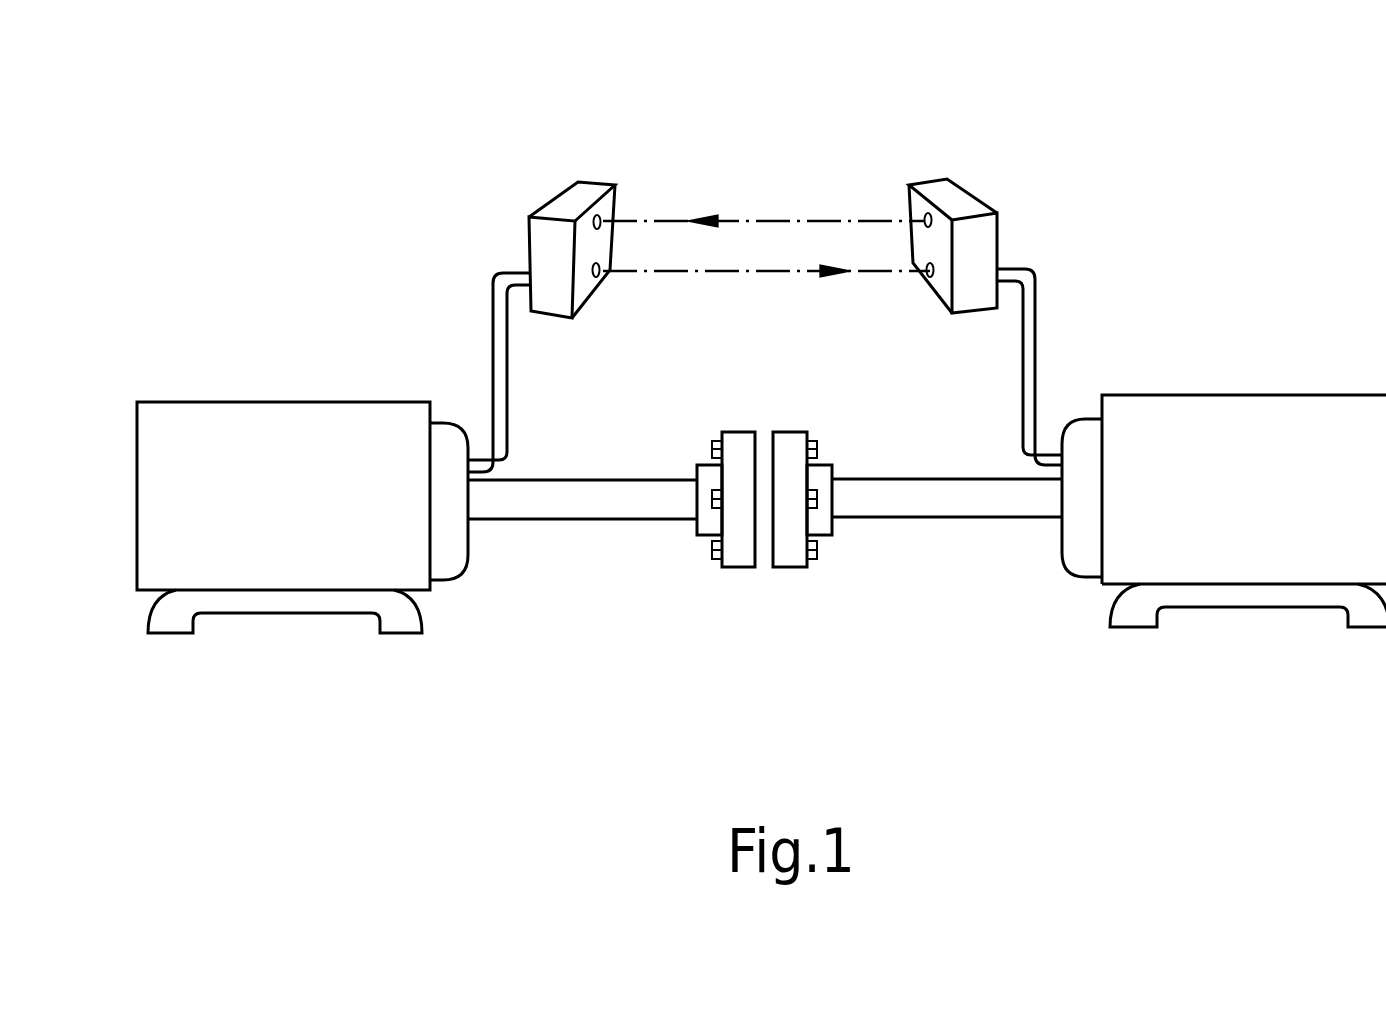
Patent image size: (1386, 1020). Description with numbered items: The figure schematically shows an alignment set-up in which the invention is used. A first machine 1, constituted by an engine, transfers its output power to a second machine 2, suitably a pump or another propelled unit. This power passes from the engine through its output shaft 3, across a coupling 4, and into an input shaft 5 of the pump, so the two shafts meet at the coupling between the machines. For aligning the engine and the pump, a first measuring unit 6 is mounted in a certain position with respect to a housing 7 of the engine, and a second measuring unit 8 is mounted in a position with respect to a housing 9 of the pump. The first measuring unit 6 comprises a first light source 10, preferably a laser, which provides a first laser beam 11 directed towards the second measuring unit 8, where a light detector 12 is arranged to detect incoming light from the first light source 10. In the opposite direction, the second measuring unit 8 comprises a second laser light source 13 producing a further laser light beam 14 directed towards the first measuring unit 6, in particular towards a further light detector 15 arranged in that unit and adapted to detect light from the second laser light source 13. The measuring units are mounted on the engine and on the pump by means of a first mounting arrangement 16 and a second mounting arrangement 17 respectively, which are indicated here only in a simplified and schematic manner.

The first machine 1 is at (1224, 521).
The second machine 2 is at (302, 526).
The output shaft 3 is at (920, 507).
The coupling 4 is at (790, 558).
The input shaft 5 is at (612, 508).
The first measuring unit 6 is at (921, 190).
The housing 7 is at (1250, 408).
The second measuring unit 8 is at (600, 190).
The housing 9 is at (285, 418).
The first light source 10 is at (909, 195).
The first laser beam 11 is at (737, 222).
The light detector 12 is at (617, 206).
The second laser light source 13 is at (601, 275).
The further laser light beam 14 is at (793, 272).
The further light detector 15 is at (929, 275).
The first mounting arrangement 16 is at (1032, 364).
The second mounting arrangement 17 is at (497, 371).